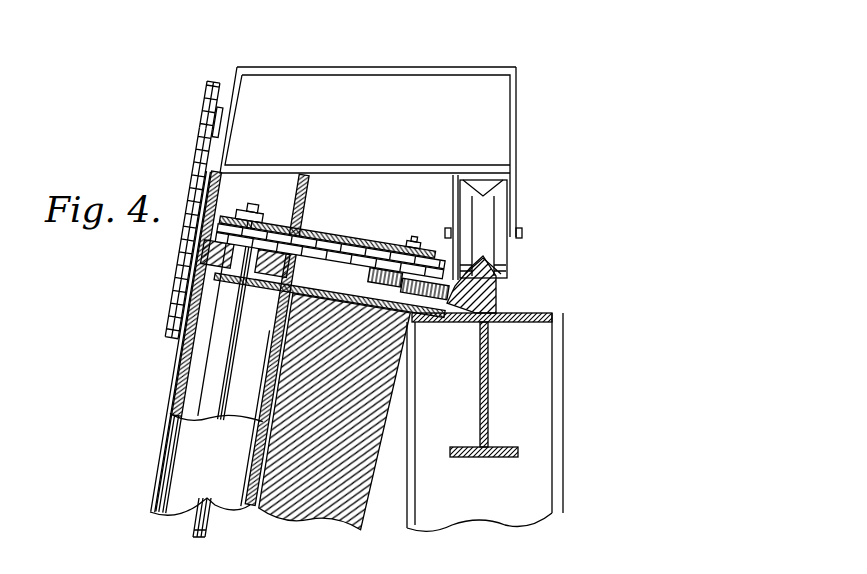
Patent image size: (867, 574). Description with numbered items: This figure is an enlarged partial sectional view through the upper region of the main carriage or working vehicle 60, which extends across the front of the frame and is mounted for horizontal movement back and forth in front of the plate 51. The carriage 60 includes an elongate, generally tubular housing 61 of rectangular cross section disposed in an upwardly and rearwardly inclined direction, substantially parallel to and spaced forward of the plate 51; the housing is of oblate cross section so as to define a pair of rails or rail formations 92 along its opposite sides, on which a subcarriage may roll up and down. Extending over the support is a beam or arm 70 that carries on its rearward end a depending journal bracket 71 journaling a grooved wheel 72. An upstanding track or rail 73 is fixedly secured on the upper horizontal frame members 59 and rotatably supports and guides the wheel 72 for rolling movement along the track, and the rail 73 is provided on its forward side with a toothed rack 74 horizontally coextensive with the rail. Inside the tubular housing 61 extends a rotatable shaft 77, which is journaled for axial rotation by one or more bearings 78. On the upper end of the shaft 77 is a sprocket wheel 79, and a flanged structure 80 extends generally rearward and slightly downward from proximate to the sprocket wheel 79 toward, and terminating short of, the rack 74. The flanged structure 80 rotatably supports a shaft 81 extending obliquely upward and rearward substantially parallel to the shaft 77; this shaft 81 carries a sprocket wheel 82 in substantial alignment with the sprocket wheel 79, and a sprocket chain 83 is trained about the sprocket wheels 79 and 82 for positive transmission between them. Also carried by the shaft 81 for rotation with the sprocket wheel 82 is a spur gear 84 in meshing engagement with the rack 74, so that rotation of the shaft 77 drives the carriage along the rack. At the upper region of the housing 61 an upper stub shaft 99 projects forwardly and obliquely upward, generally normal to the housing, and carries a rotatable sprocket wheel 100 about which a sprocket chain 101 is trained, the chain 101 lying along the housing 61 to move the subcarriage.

The beam or arm 70 is at (390, 100).
The journal bracket 71 is at (518, 205).
The grooved wheel 72 is at (508, 265).
The upstanding track or rail 73 is at (498, 296).
The toothed rack 74 is at (438, 324).
The upper horizontal frame members 59 is at (489, 393).
The plate 51 is at (336, 518).
The tubular housing 61 is at (242, 500).
The rail formations 92 is at (152, 487).
The main carriage or working vehicle 60 is at (157, 447).
The sprocket chain 101 is at (197, 208).
The upper stub shaft 99 is at (206, 125).
The sprocket wheel 100 is at (205, 134).
The bearings 78 is at (212, 275).
The rotatable shaft 77 is at (215, 375).
The sprocket wheel 79 is at (252, 197).
The sprocket chain 83 is at (325, 233).
The flanged structure 80 is at (371, 241).
The spur gear 84 is at (369, 274).
The shaft 81 is at (412, 244).
The sprocket wheel 82 is at (419, 240).